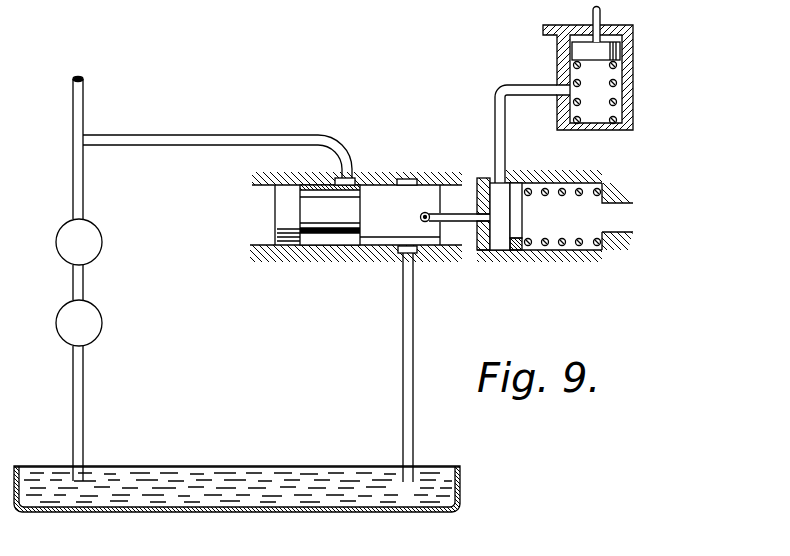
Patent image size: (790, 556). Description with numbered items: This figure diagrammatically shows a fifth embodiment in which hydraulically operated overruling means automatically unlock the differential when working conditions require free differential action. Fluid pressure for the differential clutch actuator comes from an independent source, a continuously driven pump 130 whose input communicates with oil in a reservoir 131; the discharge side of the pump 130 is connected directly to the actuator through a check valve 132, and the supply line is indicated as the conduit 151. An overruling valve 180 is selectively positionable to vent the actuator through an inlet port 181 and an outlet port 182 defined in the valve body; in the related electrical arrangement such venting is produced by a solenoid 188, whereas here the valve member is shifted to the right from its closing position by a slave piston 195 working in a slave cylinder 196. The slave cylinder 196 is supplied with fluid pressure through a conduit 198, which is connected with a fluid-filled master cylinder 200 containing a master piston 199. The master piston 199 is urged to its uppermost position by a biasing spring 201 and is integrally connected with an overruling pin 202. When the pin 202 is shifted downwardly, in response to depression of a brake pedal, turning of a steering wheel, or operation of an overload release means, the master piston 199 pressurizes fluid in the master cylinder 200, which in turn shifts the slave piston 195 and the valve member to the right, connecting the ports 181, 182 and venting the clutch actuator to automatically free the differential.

The pump 130 is at (101, 317).
The reservoir 131 is at (210, 497).
The check valve 132 is at (101, 239).
The supply conduit 151 is at (212, 240).
The overruling valve 180 is at (313, 262).
The inlet port 181 is at (356, 181).
The outlet port 182 is at (404, 254).
The solenoid 188 is at (282, 208).
The slave piston 195 is at (515, 252).
The slave cylinder 196 is at (500, 252).
The conduit 198 is at (496, 134).
The master piston 199 is at (577, 53).
The master cylinder 200 is at (573, 72).
The biasing spring 201 is at (622, 82).
The overruling pin 202 is at (601, 15).